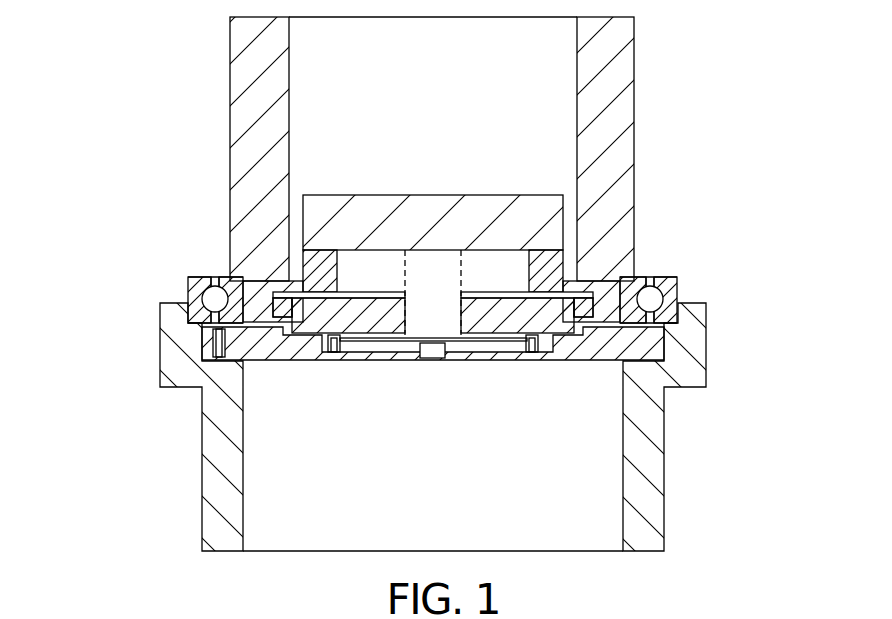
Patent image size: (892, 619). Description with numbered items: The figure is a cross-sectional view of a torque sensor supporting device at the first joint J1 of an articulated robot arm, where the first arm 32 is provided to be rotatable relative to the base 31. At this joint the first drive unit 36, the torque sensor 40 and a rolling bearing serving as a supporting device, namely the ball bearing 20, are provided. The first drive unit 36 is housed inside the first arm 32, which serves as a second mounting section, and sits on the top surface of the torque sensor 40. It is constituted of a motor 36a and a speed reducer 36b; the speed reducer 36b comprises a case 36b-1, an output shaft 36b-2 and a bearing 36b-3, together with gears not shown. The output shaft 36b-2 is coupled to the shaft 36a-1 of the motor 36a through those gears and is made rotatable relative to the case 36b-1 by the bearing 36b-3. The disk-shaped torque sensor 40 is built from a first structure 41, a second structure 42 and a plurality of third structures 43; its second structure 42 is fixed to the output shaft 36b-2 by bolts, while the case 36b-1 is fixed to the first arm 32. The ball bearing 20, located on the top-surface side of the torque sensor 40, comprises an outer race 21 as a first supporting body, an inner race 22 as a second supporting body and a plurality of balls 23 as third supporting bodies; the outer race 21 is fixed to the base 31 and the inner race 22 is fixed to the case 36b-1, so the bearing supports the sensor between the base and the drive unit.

The first joint J1 is at (164, 259).
The first arm 32 is at (634, 80).
The base 31 is at (664, 512).
The first drive unit 36 is at (460, 276).
The motor 36a is at (537, 216).
The shaft 36a-1 is at (425, 268).
The speed reducer 36b is at (439, 307).
The case 36b-1 is at (270, 291).
The output shaft 36b-2 is at (510, 333).
The bearing 36b-3 is at (320, 340).
The ball bearing 20 is at (499, 290).
The outer race 21 is at (680, 313).
The inner race 22 is at (648, 277).
The balls 23 is at (650, 299).
The torque sensor 40 is at (362, 387).
The first structure 41 is at (205, 335).
The second structure 42 is at (330, 347).
The third structures 43 is at (300, 340).